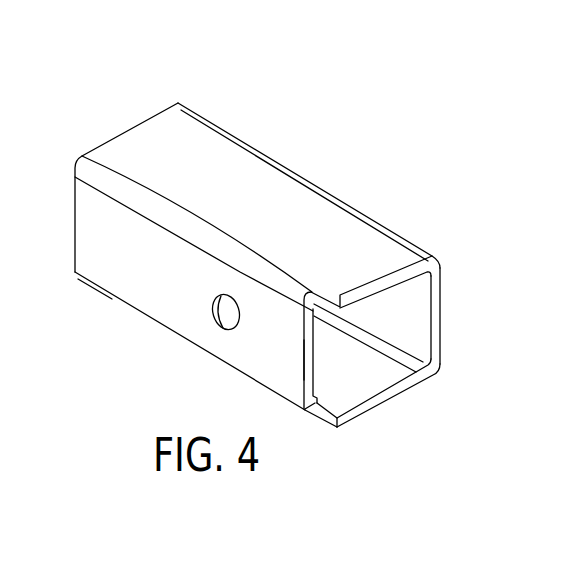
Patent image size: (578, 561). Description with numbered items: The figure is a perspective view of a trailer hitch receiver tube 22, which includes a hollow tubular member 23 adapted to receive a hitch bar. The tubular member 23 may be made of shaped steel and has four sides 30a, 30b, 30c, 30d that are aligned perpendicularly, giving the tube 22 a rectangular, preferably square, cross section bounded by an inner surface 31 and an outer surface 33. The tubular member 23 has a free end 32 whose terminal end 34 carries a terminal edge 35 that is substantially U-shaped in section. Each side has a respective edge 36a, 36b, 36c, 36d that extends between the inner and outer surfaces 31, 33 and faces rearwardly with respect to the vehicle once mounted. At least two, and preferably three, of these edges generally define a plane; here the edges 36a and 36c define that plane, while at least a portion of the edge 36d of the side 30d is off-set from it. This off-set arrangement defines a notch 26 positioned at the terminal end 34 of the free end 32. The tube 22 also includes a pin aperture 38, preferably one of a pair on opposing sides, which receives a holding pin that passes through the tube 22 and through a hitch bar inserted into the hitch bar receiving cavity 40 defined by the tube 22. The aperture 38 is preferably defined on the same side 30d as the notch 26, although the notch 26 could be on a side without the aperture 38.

The tube 22 is at (375, 93).
The hollow tubular member 23 is at (202, 183).
The notch 26 is at (313, 362).
The side 30a is at (265, 223).
The side 30b is at (424, 302).
The side 30c is at (413, 386).
The side 30d is at (145, 271).
The inner surface 31 is at (426, 284).
The free end 32 is at (477, 215).
The outer surface 33 is at (385, 247).
The terminal end 34 is at (315, 424).
The terminal edge 35 is at (371, 408).
The edge 36a is at (360, 298).
The edge 36b is at (391, 333).
The edge 36c is at (358, 416).
The edge 36d is at (312, 338).
The pin aperture 38 is at (215, 314).
The hitch bar receiving cavity 40 is at (433, 367).